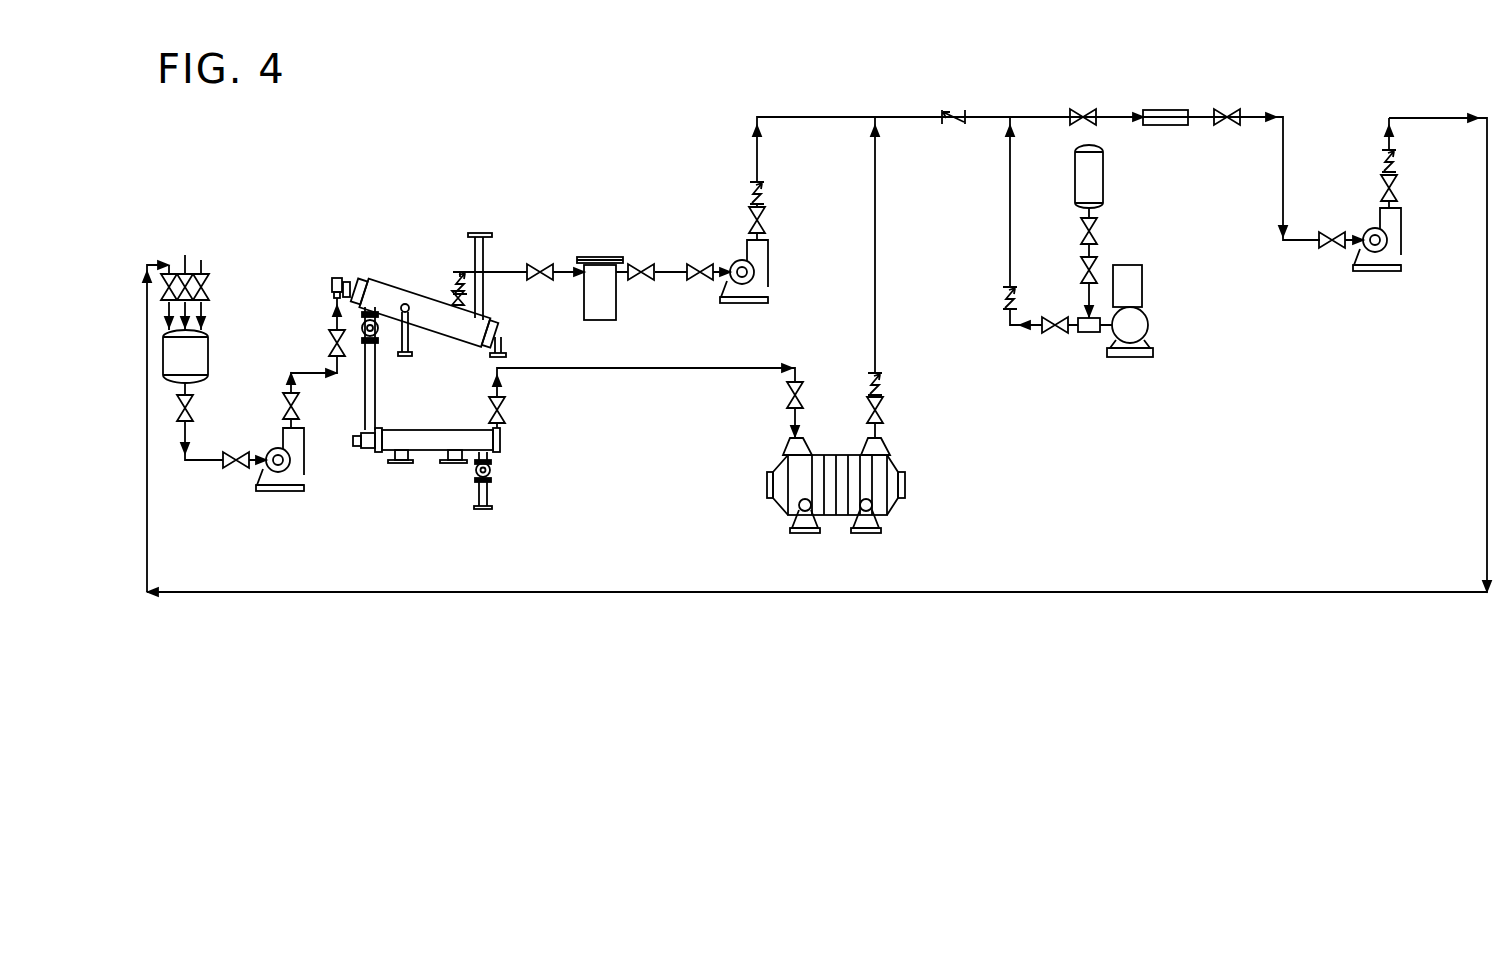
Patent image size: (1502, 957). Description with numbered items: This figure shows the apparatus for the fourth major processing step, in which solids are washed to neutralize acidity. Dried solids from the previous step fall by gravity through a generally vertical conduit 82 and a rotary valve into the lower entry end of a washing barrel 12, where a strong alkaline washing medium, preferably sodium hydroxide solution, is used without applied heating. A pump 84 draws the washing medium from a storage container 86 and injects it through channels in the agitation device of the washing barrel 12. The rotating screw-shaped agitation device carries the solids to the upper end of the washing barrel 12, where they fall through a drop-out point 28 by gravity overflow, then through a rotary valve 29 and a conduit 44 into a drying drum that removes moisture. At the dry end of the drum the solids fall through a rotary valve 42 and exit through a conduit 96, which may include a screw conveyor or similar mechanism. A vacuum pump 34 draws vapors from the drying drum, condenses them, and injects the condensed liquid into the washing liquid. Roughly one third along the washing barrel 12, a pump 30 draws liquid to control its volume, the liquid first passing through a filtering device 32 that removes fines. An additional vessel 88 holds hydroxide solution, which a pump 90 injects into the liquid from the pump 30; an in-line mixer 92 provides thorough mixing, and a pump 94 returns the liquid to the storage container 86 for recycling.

The washing barrel 12 is at (419, 290).
The drop-out point 28 is at (388, 288).
The rotary valve 29 is at (378, 332).
The pump 30 is at (733, 257).
The filtering device 32 is at (616, 300).
The vacuum pump 34 is at (905, 487).
The rotary valve 42 is at (493, 468).
The conduit 44 is at (426, 385).
The conduit 82 is at (487, 245).
The pump 84 is at (302, 466).
The storage container 86 is at (208, 340).
The vessel 88 is at (1075, 175).
The pump 90 is at (1128, 265).
The in-line mixer 92 is at (1162, 112).
The pump 94 is at (1398, 245).
The conduit 96 is at (488, 493).